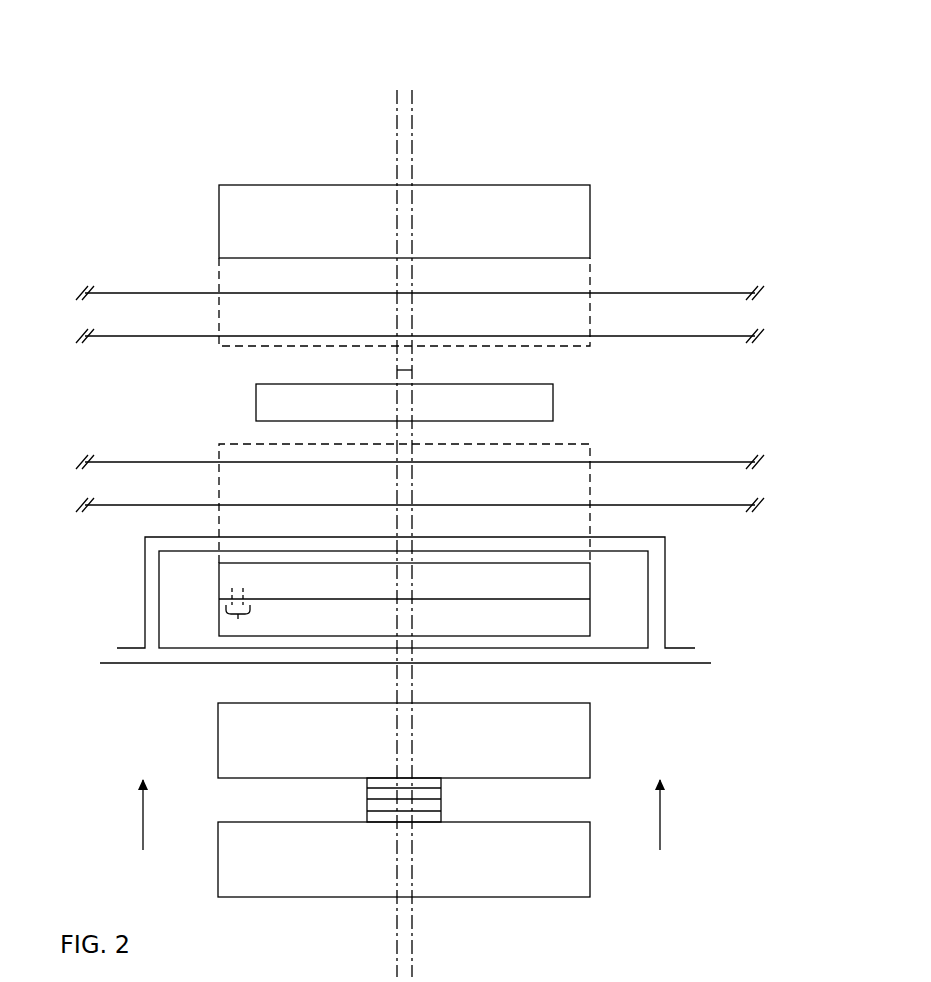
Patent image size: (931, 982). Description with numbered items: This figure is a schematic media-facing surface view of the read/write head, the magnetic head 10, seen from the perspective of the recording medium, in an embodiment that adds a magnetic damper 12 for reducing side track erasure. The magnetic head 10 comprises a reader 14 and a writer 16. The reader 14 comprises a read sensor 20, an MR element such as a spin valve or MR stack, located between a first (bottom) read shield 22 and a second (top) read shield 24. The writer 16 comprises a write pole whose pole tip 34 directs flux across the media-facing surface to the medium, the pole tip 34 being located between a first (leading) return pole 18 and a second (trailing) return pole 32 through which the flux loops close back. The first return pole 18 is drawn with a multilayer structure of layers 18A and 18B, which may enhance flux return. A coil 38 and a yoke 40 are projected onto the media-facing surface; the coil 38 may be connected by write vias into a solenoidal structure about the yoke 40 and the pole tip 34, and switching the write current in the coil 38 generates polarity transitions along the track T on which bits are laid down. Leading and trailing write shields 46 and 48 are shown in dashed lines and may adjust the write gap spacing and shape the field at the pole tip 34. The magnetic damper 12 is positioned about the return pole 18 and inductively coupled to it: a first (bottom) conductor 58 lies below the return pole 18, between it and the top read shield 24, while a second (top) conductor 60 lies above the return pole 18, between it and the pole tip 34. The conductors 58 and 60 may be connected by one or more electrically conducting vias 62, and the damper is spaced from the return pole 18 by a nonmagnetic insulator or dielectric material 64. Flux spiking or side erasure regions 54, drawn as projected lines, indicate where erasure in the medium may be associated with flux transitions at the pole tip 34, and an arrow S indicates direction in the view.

The magnetic head 10 is at (92, 70).
The magnetic damper 12 is at (137, 579).
The reader 14 is at (170, 736).
The writer 16 is at (765, 227).
The first return pole 18 is at (218, 585).
The layer of first return pole 18A is at (386, 599).
The layer of first return pole 18B is at (461, 634).
The read sensor 20 is at (442, 803).
The first read shield 22 is at (456, 874).
The second read shield 24 is at (380, 754).
The second return pole 32 is at (380, 234).
The pole tip 34 is at (412, 370).
The coil 38 is at (642, 327).
The yoke 40 is at (456, 417).
The leading write shield 46 is at (565, 439).
The trailing write shield 48 is at (255, 350).
The side erasure regions 54 is at (237, 619).
The first conductor 58 is at (507, 653).
The second conductor 60 is at (610, 545).
The electrically conducting vias 62 is at (151, 607).
The nonmagnetic insulator 64 is at (617, 632).
The track T is at (417, 532).
The direction of movement S is at (390, 817).